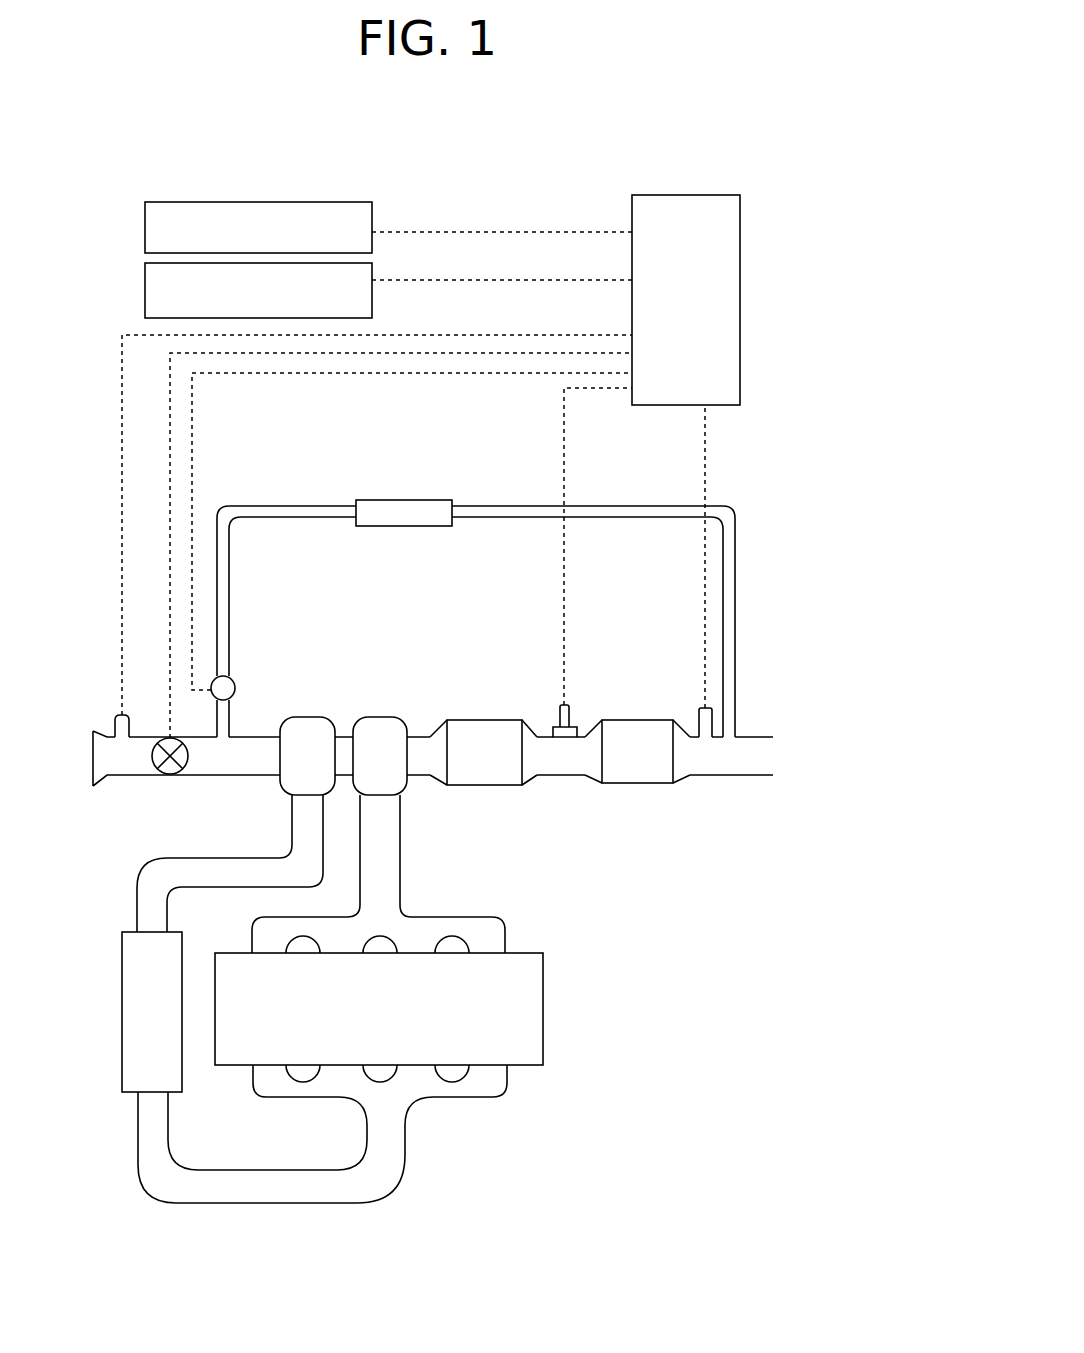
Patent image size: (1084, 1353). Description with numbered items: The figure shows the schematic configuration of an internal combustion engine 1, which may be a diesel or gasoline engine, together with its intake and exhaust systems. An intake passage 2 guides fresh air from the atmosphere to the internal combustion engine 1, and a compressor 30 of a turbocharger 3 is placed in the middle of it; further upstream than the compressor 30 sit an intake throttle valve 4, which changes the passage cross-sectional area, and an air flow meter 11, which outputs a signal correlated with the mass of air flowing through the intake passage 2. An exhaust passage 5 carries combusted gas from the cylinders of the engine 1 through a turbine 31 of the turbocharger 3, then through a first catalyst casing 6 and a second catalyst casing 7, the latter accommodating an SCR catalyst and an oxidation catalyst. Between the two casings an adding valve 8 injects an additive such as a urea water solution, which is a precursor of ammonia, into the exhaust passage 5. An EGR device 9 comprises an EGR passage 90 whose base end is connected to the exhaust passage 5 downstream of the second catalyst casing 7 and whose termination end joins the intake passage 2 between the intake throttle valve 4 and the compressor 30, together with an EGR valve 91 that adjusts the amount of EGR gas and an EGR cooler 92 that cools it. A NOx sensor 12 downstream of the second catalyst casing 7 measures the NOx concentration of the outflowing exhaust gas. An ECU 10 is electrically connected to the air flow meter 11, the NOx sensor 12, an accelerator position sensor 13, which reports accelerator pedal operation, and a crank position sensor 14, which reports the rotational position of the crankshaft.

The internal combustion engine 1 is at (545, 1012).
The intake passage 2 is at (248, 1203).
The turbocharger 3 is at (349, 704).
The intake throttle valve 4 is at (167, 775).
The exhaust passage 5 is at (402, 886).
The first catalyst casing 6 is at (493, 786).
The second catalyst casing 7 is at (655, 784).
The adding valve 8 is at (558, 705).
The EGR device 9 is at (473, 572).
The ECU 10 is at (740, 360).
The air flow meter 11 is at (117, 715).
The NOx sensor 12 is at (700, 709).
The accelerator position sensor 13 is at (145, 234).
The crank position sensor 14 is at (145, 285).
The compressor 30 is at (300, 717).
The turbine 31 is at (343, 722).
The EGR passage 90 is at (607, 505).
The EGR valve 91 is at (236, 683).
The EGR cooler 92 is at (405, 500).